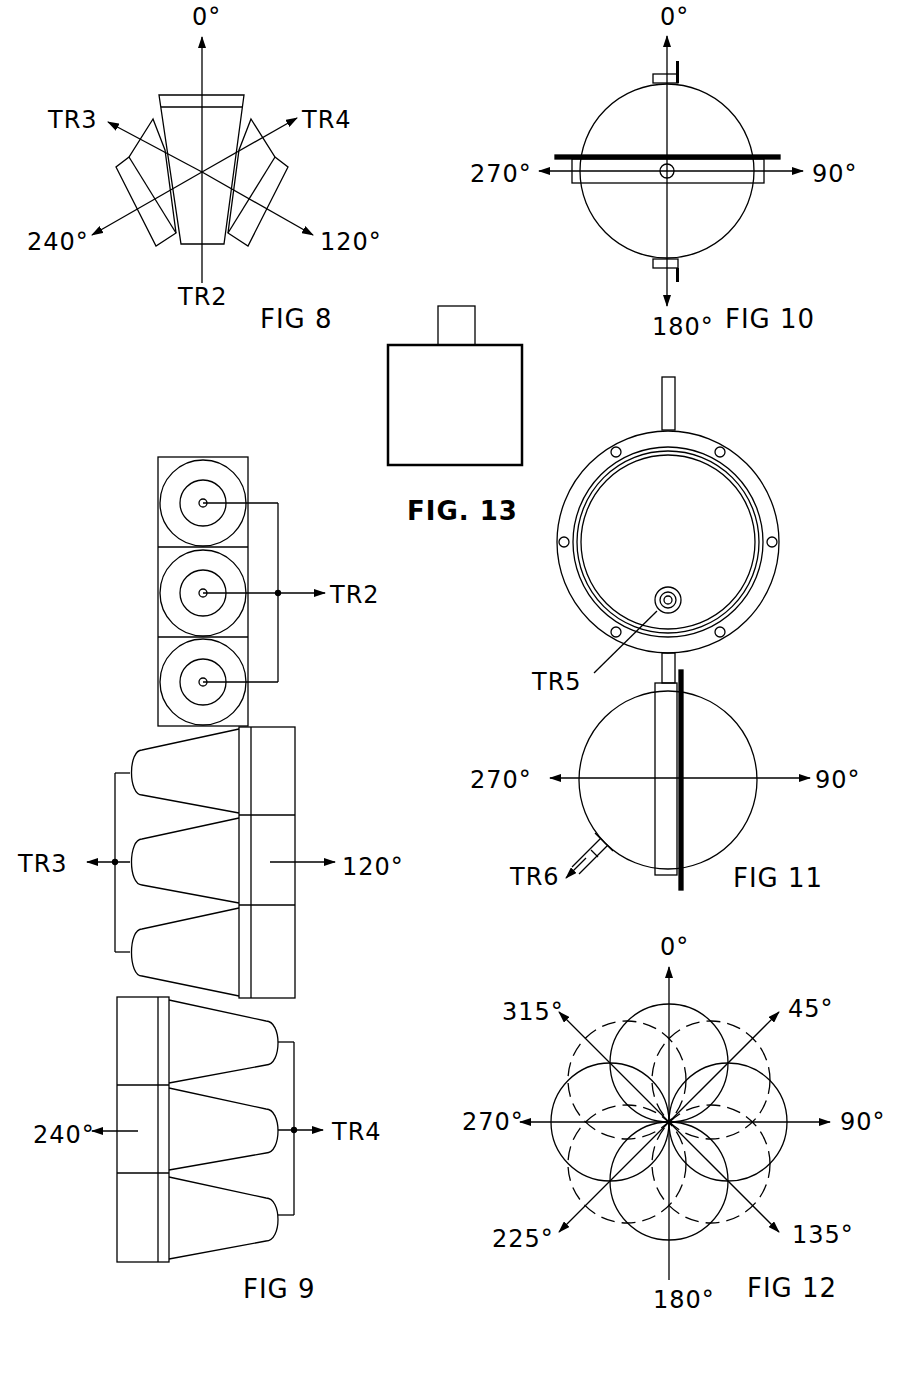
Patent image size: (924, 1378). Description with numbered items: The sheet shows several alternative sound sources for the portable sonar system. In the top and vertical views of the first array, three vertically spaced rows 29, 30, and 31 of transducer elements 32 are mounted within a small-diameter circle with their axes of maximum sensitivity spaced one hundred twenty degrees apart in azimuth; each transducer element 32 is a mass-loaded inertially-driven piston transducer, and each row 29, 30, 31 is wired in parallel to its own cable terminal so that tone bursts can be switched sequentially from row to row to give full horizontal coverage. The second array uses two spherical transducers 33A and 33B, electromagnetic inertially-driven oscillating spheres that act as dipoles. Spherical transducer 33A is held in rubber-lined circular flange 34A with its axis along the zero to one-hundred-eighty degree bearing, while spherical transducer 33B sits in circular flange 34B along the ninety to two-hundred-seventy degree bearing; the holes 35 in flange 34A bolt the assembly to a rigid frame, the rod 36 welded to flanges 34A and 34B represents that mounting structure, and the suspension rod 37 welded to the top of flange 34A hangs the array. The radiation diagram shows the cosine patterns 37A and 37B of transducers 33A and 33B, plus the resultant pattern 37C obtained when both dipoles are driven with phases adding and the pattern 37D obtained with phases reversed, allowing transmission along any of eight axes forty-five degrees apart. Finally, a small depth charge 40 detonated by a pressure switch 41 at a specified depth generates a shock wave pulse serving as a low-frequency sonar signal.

In FIG. 8, the vertical row of transducer elements 29 is at (227, 97).
In FIG. 9, the vertical row of transducer elements 29 is at (123, 608).
In FIG. 8, the vertical row of transducer elements 30 is at (283, 184).
In FIG. 9, the vertical row of transducer elements 30 is at (363, 833).
In FIG. 8, the vertical row of transducer elements 31 is at (122, 185).
In FIG. 9, the vertical row of transducer elements 31 is at (78, 1103).
In FIG. 9, the transducer element 32 is at (248, 468).
In FIG. 10, the spherical transducer 33A is at (732, 107).
In FIG. 11, the spherical transducer 33A is at (715, 492).
In FIG. 11, the spherical transducer 33B is at (745, 730).
In FIG. 10, the circular flange 34A is at (775, 156).
In FIG. 11, the circular flange 34A is at (767, 485).
In FIG. 10, the circular flange 34B is at (680, 65).
In FIG. 11, the circular flange 34B is at (685, 673).
In FIG. 11, the holes 35 is at (610, 448).
In FIG. 11, the rod 36 is at (662, 667).
In FIG. 11, the suspension rod 37 is at (675, 402).
In FIG. 12, the directional radiation pattern 37A is at (700, 1008).
In FIG. 12, the directional radiation pattern 37B is at (788, 1103).
In FIG. 12, the resultant radiation pattern 37C is at (768, 1060).
In FIG. 12, the resultant radiation pattern 37D is at (612, 1023).
In FIG. 13, the depth charge 40 is at (522, 385).
In FIG. 13, the pressure switch 41 is at (475, 327).